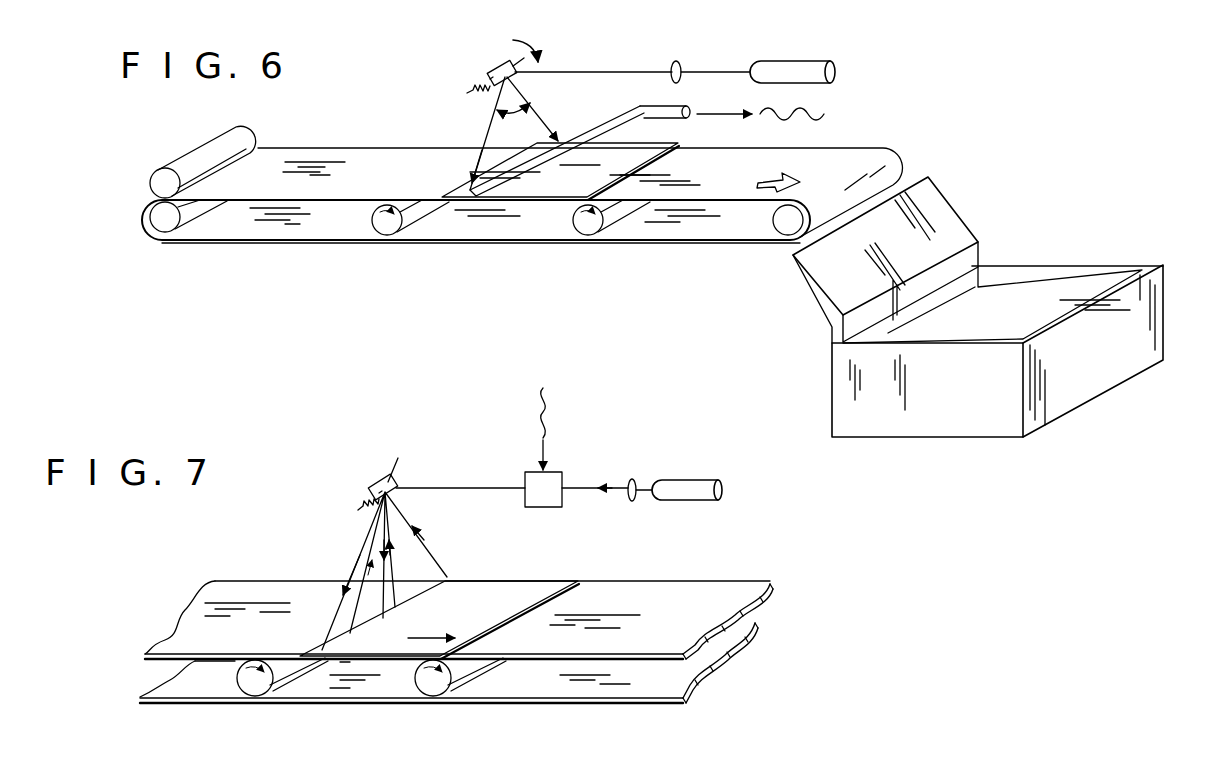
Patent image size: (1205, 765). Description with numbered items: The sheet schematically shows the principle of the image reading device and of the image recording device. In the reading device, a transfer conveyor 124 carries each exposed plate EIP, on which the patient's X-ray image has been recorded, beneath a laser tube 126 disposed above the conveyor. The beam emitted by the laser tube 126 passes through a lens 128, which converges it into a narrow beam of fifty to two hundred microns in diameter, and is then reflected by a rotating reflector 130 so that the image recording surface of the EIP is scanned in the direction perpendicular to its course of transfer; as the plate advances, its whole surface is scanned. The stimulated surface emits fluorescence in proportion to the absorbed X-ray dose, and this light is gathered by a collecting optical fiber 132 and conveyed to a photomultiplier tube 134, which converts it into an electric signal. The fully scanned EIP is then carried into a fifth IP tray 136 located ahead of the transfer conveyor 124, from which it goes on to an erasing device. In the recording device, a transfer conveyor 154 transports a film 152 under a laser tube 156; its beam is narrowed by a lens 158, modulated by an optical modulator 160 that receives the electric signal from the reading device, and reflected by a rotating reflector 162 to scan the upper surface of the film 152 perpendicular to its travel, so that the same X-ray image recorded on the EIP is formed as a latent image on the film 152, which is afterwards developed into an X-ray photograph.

In FIG. 6, the transfer conveyor 124 is at (352, 158).
In FIG. 6, the laser tube 126 is at (789, 60).
In FIG. 6, the lens 128 is at (677, 60).
In FIG. 6, the rotating reflector 130 is at (494, 66).
In FIG. 6, the collecting optical fiber 132 is at (596, 128).
In FIG. 6, the photomultiplier tube 134 is at (678, 108).
In FIG. 6, the fifth IP tray 136 is at (1036, 266).
In FIG. 6, the exposed imaging plate EIP is at (525, 193).
In FIG. 7, the film 152 is at (490, 583).
In FIG. 7, the transfer conveyor 154 is at (264, 590).
In FIG. 7, the laser tube 156 is at (692, 478).
In FIG. 7, the lens 158 is at (633, 478).
In FIG. 7, the optical modulator 160 is at (563, 480).
In FIG. 7, the rotating reflector 162 is at (372, 478).